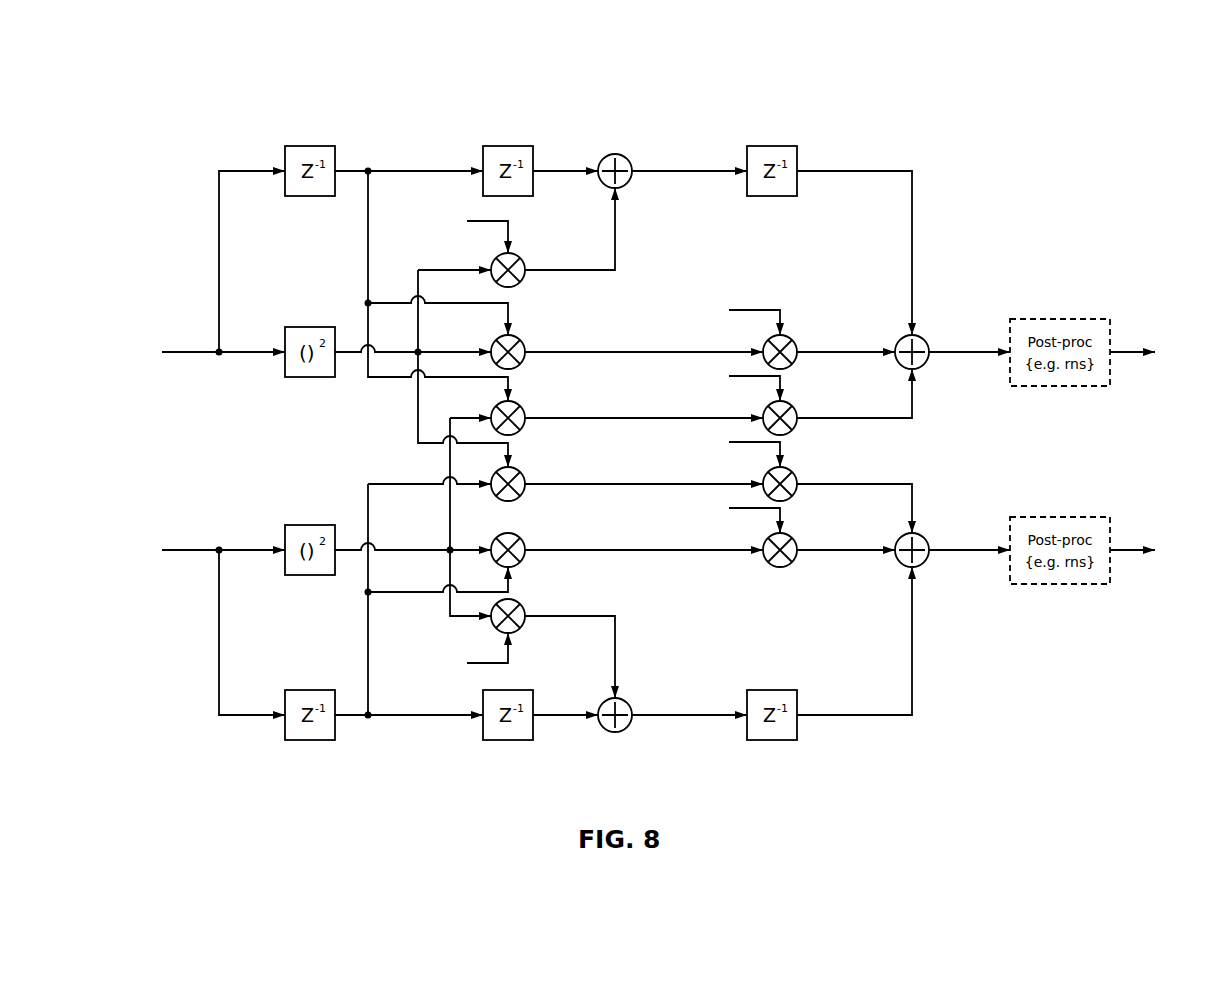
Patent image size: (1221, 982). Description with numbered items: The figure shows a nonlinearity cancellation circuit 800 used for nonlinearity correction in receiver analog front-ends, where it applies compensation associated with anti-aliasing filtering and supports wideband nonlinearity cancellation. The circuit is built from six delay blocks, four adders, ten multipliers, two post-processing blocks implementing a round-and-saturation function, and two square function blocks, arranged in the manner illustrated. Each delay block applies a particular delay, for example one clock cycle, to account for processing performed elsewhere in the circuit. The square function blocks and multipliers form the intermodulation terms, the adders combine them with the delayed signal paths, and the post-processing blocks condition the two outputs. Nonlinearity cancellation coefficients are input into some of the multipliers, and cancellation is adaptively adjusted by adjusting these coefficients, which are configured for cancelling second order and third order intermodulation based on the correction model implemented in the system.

The nonlinearity cancellation circuit 800 is at (243, 122).